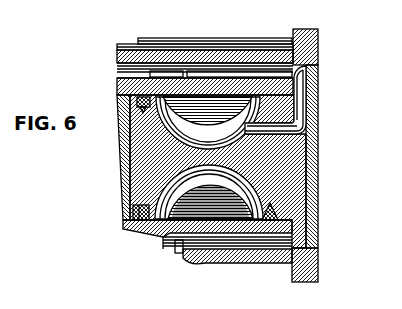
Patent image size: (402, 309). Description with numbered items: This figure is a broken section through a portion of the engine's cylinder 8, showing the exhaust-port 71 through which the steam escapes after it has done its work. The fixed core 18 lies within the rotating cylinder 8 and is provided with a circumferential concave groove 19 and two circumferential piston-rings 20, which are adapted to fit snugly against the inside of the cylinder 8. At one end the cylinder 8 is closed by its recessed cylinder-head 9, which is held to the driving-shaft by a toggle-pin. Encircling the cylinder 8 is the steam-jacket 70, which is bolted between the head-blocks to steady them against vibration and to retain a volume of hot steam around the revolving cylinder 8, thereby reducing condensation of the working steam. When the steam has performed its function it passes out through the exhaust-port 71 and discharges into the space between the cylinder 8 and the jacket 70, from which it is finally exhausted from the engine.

The cylinder 8 is at (117, 79).
The cylinder-head 9 is at (118, 145).
The core 18 is at (297, 168).
The circumferential concave groove 19 is at (238, 164).
The circumferential piston-rings 20 is at (122, 205).
The steam-jacket 70 is at (318, 42).
The exhaust-port 71 is at (300, 94).